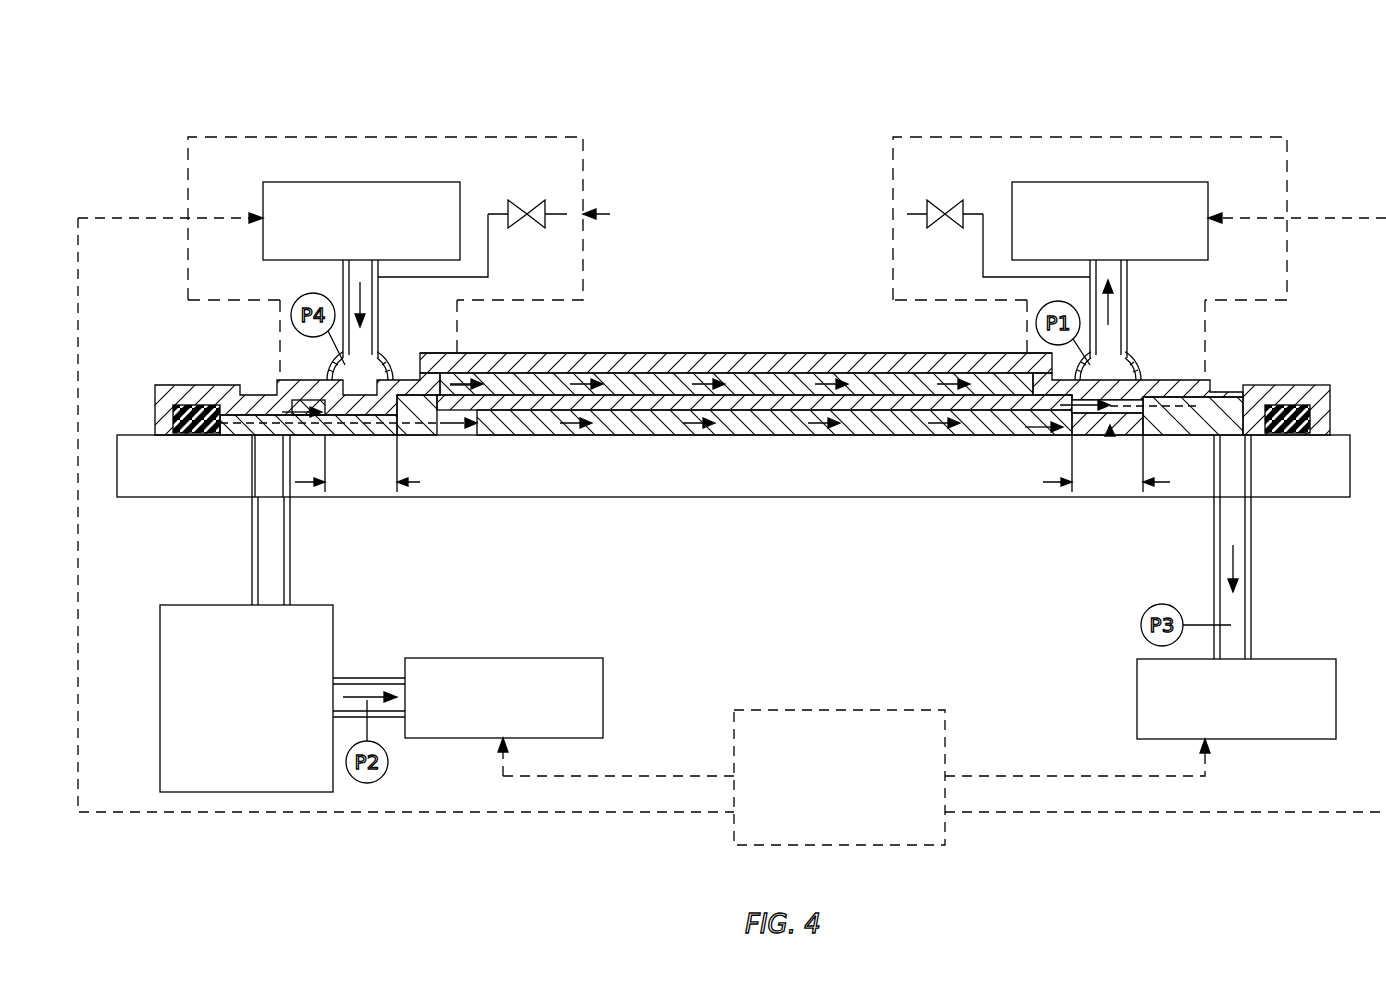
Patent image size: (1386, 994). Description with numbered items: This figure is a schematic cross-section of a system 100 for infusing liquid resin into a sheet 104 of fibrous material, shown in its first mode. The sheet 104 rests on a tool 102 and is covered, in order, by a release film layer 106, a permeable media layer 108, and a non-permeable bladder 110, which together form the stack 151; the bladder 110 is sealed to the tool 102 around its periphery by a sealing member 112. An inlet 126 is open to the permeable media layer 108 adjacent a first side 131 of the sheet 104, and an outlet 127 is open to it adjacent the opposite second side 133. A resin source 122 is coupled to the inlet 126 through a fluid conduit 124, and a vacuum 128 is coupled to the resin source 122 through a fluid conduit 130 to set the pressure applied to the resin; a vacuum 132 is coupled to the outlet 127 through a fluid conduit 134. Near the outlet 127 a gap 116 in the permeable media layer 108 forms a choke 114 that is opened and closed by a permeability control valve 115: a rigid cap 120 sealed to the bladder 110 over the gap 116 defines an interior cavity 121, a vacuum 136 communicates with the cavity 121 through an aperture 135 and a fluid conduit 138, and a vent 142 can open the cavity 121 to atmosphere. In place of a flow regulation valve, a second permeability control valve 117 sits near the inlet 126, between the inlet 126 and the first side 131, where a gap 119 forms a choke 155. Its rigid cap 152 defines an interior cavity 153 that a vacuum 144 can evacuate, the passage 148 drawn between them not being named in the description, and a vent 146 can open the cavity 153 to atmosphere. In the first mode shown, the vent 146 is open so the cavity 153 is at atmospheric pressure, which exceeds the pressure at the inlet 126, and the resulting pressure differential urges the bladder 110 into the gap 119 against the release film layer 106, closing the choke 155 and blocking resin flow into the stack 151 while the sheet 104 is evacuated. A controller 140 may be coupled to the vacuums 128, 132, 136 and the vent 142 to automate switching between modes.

The system 100 is at (1072, 56).
The tool 102 is at (175, 492).
The sheet 104 is at (522, 428).
The release film layer 106 is at (680, 390).
The permeable media layer 108 is at (760, 372).
The non-permeable bladder 110 is at (788, 368).
The sealing member 112 is at (180, 410).
The choke 114 is at (1109, 440).
The permeability control valve 115 is at (1160, 135).
The gap 116 is at (1047, 495).
The permeability control valve 117 is at (484, 135).
The gap 119 is at (418, 490).
The rigid cap 120 is at (1138, 352).
The interior cavity 121 is at (1143, 373).
The resin source 122 is at (266, 738).
The fluid conduit 124 is at (292, 523).
The inlet 126 is at (262, 470).
The outlet 127 is at (1249, 500).
The vacuum 128 is at (524, 722).
The fluid conduit 130 is at (372, 678).
The first side 131 is at (465, 440).
The vacuum 132 is at (1256, 723).
The second side 133 is at (1007, 432).
The fluid conduit 134 is at (1255, 583).
The aperture 135 is at (1125, 310).
The vacuum 136 is at (1130, 246).
The fluid conduit 138 is at (1092, 282).
The controller 140 is at (860, 801).
The vent 142 is at (936, 200).
The vacuum 144 is at (381, 246).
The vent 146 is at (516, 201).
The vacuum pipe 148 is at (379, 300).
The stack 151 is at (903, 356).
The rigid cap 152 is at (335, 372).
The interior cavity 153 is at (381, 355).
The choke 155 is at (318, 412).